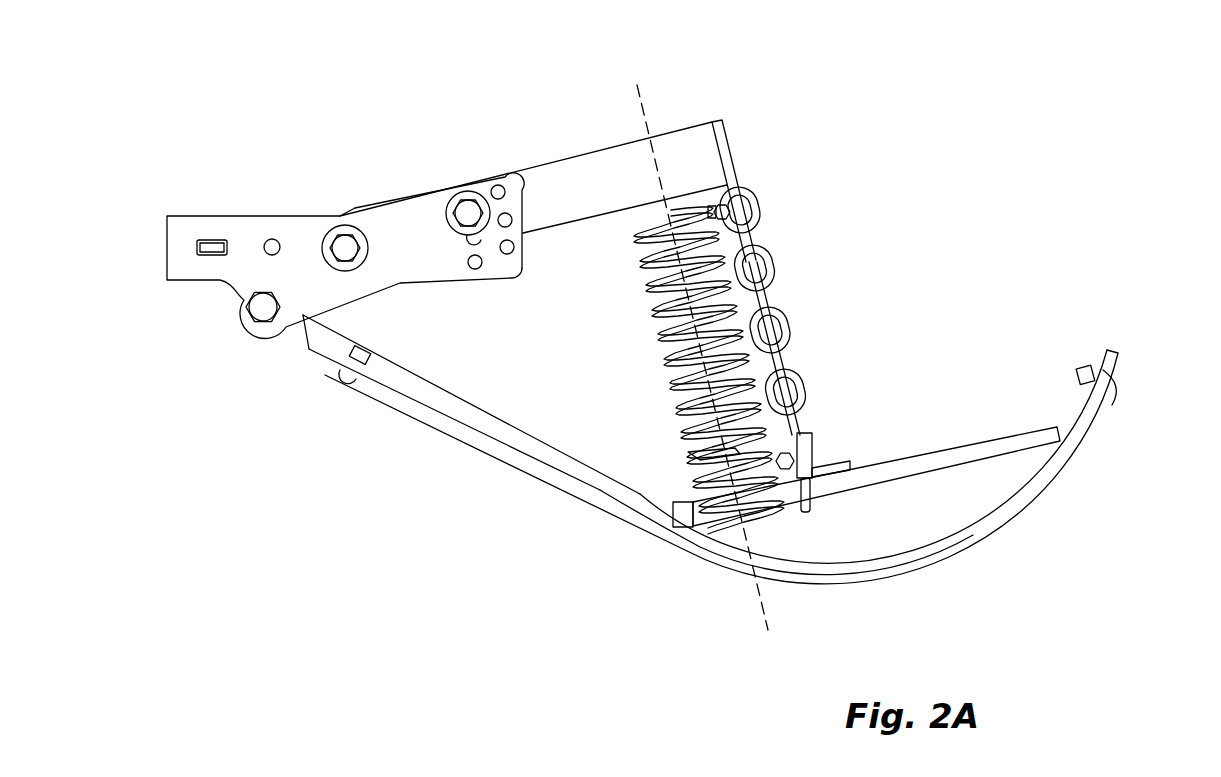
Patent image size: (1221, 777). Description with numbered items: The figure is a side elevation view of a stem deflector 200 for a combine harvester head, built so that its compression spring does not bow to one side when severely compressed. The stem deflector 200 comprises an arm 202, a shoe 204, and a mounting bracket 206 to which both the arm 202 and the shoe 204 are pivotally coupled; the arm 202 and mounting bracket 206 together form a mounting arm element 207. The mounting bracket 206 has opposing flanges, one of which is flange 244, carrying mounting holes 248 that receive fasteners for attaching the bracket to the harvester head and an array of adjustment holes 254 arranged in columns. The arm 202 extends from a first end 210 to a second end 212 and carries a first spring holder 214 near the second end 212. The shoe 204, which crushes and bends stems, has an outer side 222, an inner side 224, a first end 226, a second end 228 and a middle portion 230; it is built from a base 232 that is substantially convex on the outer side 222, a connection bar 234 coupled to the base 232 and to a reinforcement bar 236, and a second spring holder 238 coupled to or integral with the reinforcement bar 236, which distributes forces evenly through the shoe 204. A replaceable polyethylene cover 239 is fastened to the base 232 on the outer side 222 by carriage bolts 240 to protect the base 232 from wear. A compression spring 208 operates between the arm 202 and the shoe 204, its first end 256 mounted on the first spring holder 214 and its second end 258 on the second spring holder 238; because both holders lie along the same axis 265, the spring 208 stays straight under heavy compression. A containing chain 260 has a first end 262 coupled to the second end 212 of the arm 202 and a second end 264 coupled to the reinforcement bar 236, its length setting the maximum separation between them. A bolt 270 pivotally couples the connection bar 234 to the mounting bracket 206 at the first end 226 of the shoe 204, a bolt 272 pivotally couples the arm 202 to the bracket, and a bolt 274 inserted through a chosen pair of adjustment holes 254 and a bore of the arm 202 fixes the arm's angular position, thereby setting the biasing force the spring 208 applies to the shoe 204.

The stem deflector 200 is at (262, 92).
The arm 202 is at (582, 143).
The shoe 204 is at (994, 378).
The mounting bracket 206 is at (232, 313).
The mounting arm element 207 is at (437, 128).
The compression spring 208 is at (652, 319).
The first end 210 is at (377, 200).
The second end 212 is at (705, 122).
The first spring holder 214 is at (640, 224).
The outer side 222 is at (988, 553).
The inner side 224 is at (903, 436).
The first end 226 is at (297, 343).
The second end 228 is at (1132, 364).
The middle portion 230 is at (707, 571).
The base 232 is at (866, 563).
The connection bar 234 is at (490, 417).
The reinforcement bar 236 is at (934, 452).
The second spring holder 238 is at (705, 478).
The cover 239 is at (857, 582).
The carriage bolts 240 is at (347, 385).
The flange 244 is at (440, 253).
The mounting holes 248 is at (271, 239).
The adjustment holes 254 is at (506, 255).
The first end 256 is at (640, 243).
The second end 258 is at (697, 458).
The containing chain 260 is at (790, 328).
The first end 262 is at (758, 192).
The second end 264 is at (808, 434).
The axis 265 is at (762, 604).
The bolt 270 is at (261, 325).
The bolt 272 is at (348, 225).
The bolt 274 is at (467, 191).